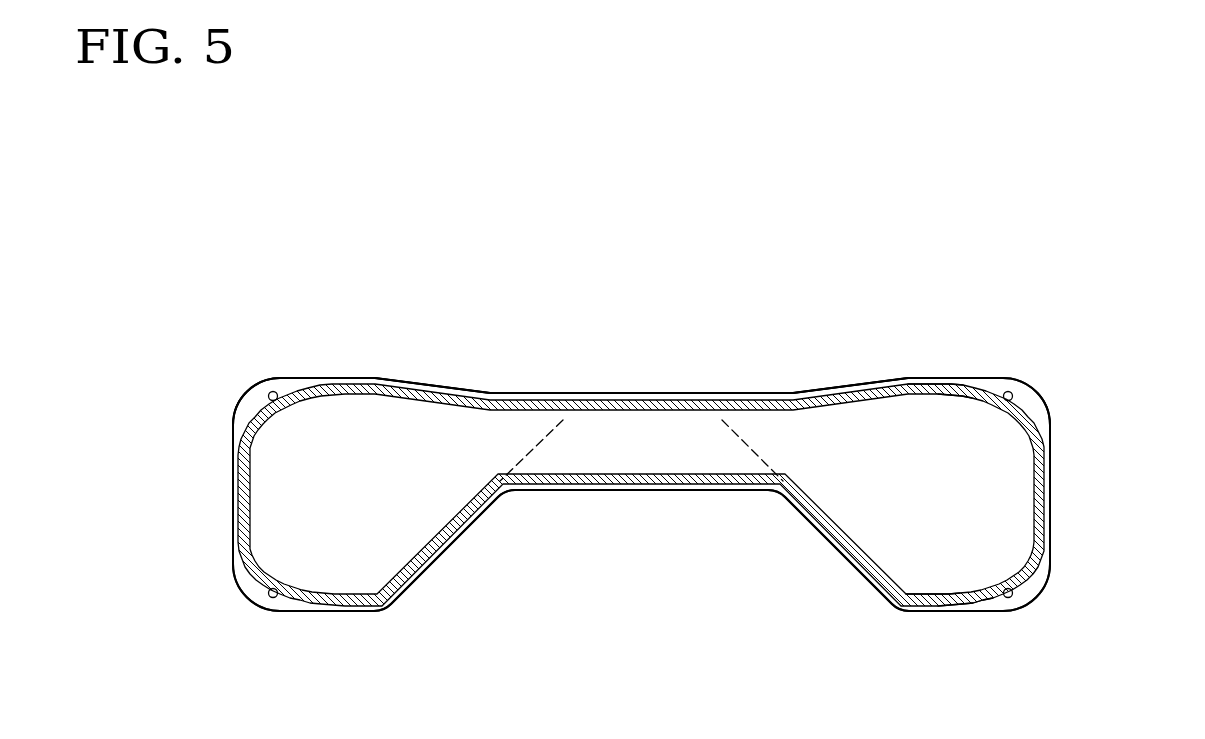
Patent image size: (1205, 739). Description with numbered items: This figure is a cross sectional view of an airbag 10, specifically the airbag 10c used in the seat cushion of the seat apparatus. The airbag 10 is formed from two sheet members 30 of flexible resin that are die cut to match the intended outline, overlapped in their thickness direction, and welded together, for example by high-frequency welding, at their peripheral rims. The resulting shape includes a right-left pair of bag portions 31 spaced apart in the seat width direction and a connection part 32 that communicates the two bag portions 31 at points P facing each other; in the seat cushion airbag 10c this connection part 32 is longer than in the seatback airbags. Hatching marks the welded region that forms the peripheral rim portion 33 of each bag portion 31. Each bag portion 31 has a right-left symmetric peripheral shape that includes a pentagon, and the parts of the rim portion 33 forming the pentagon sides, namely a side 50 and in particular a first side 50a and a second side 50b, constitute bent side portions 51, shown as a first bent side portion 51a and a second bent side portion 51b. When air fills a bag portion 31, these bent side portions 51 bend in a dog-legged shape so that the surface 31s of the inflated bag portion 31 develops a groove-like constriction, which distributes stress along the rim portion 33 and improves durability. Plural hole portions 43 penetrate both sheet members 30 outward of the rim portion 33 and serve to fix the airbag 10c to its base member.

The airbag 10 is at (117, 183).
The airbag of the seat cushion 10c is at (256, 401).
The sheet member 30 is at (1050, 578).
The bag portion 31 is at (450, 587).
The surface of the bag portion 31s is at (266, 535).
The connection part 32 is at (635, 492).
The peripheral rim portion 33 is at (413, 386).
The hole portion 43 is at (268, 391).
The side of the pentagon shape 50 is at (332, 389).
The first side of the pentagon shape 50a is at (965, 602).
The second side of the pentagon shape 50b is at (935, 384).
The bent side portion 51 is at (295, 399).
The first bent side portion 51a is at (933, 593).
The second bent side portion 51b is at (955, 396).
The point P is at (563, 420).